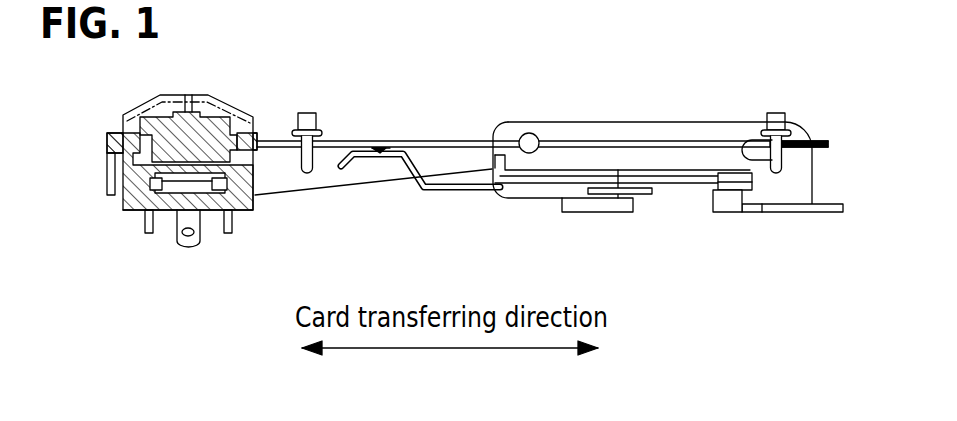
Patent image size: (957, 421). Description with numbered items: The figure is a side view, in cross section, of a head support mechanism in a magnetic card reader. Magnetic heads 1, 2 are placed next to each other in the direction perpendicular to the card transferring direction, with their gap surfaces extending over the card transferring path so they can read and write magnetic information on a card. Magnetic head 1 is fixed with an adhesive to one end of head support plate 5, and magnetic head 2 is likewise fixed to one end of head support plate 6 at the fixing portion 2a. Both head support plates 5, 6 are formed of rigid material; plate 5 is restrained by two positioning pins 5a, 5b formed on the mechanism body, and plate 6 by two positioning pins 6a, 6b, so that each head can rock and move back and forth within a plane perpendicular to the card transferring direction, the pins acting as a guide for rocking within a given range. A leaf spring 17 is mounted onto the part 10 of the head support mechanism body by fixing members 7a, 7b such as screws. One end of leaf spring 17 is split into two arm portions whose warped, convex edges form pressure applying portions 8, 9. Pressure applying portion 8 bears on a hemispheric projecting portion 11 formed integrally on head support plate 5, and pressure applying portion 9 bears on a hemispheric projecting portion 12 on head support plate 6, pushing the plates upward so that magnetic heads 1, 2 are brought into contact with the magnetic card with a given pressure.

The magnetic head 1 is at (154, 189).
The magnetic head 2 is at (127, 210).
The fixing portion of magnetic head to head support plate 2a is at (103, 140).
The head support plate 5 is at (542, 111).
The head support plate 6 is at (453, 137).
The positioning pin 5a is at (260, 107).
The positioning pin 6a is at (297, 110).
The positioning pin 5b is at (734, 115).
The positioning pin 6b is at (768, 113).
The fixing member 7a is at (617, 195).
The fixing member 7b is at (717, 193).
The pressure applying portion 8 is at (420, 193).
The pressure applying portion 9 is at (387, 160).
The part of head support mechanism body 10 is at (590, 207).
The hemispheric projecting portion 11 is at (411, 117).
The hemispheric projecting portion 12 is at (382, 147).
The leaf spring 17 is at (453, 193).